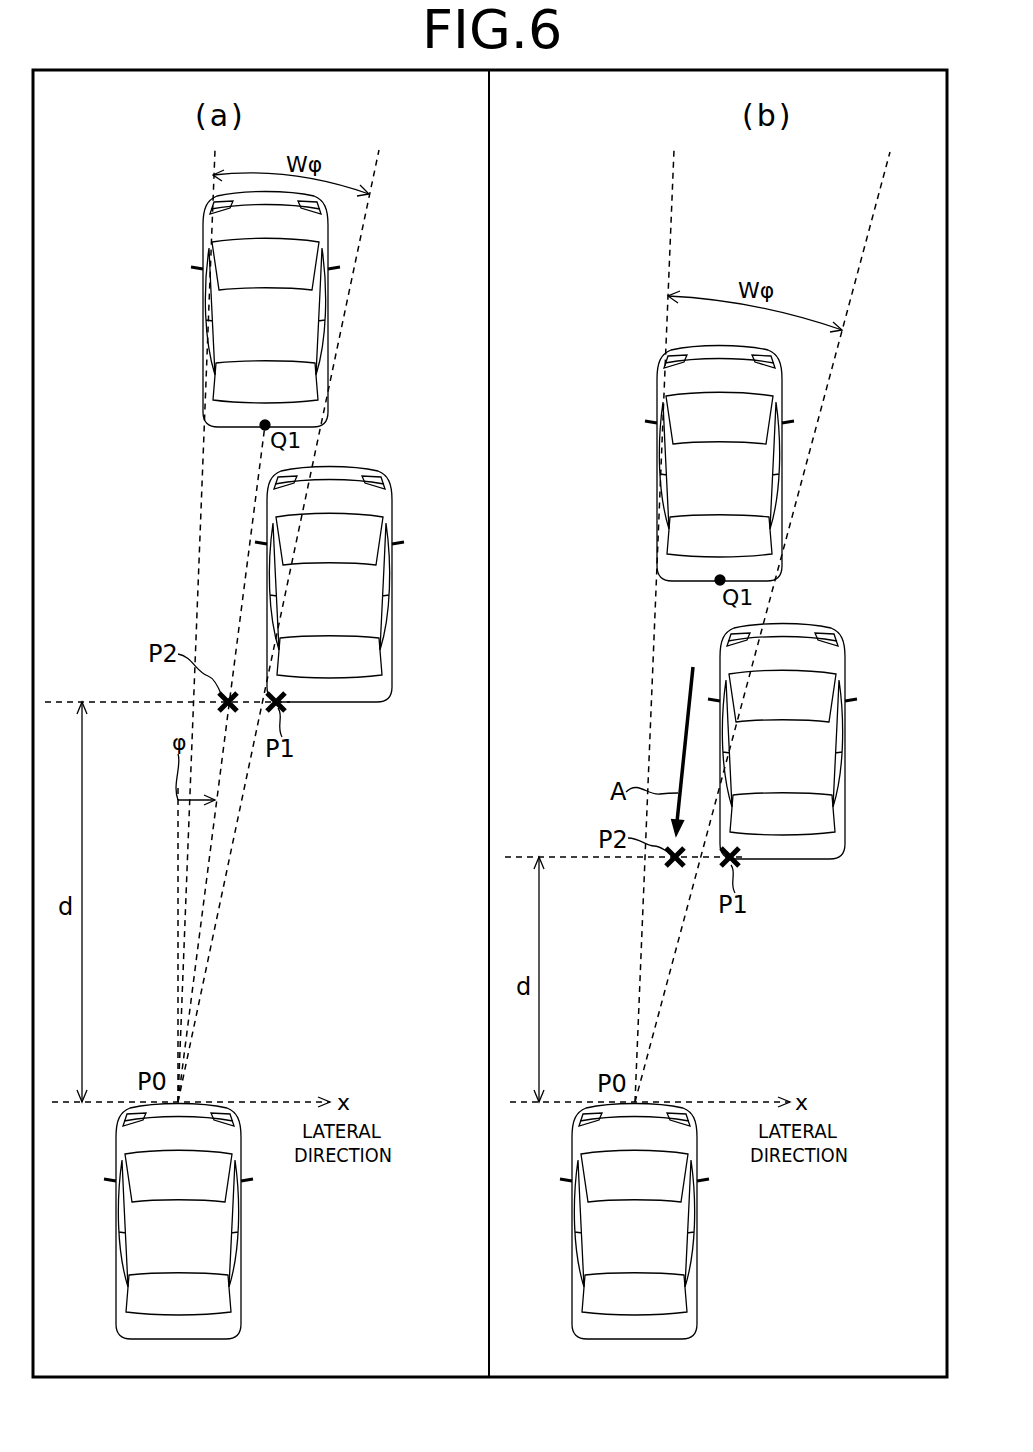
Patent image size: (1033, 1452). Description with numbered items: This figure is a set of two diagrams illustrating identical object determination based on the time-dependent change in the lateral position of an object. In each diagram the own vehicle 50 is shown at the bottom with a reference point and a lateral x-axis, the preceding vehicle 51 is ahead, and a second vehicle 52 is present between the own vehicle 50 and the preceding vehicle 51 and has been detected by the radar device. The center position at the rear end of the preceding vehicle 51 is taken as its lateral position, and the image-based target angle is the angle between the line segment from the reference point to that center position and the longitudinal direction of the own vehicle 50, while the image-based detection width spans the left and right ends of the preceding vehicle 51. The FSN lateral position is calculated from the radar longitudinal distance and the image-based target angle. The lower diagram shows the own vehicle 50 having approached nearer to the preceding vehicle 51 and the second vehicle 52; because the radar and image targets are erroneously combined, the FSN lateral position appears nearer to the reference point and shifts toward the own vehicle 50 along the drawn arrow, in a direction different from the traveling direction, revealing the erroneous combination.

The own vehicle 50 is at (241, 1293).
The preceding vehicle 51 is at (328, 352).
The second vehicle 52 is at (392, 626).